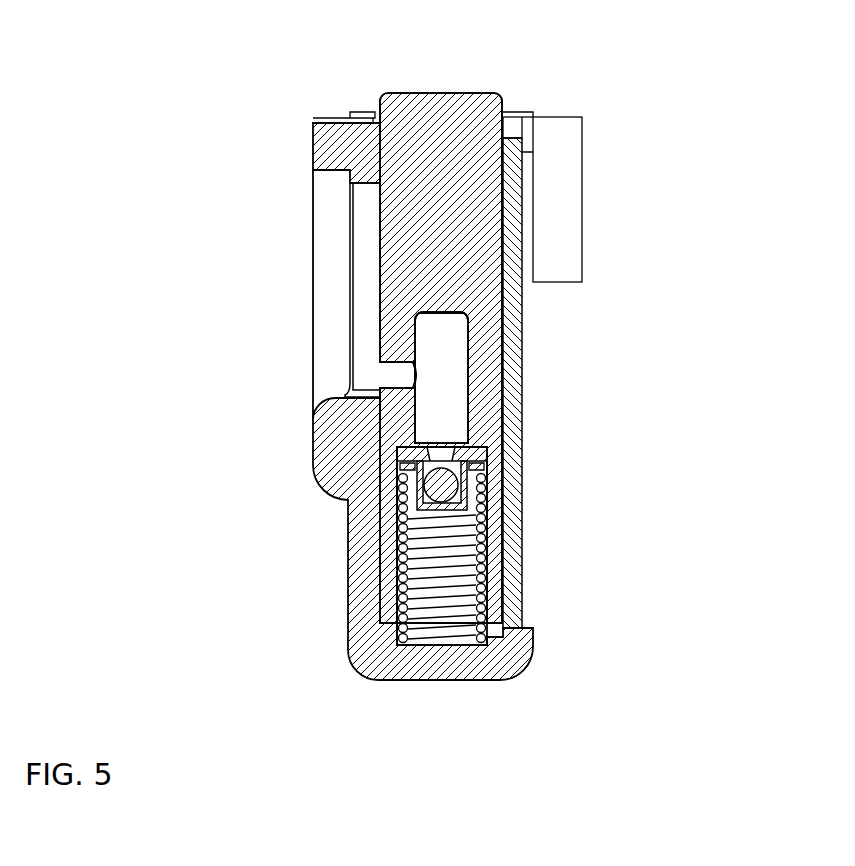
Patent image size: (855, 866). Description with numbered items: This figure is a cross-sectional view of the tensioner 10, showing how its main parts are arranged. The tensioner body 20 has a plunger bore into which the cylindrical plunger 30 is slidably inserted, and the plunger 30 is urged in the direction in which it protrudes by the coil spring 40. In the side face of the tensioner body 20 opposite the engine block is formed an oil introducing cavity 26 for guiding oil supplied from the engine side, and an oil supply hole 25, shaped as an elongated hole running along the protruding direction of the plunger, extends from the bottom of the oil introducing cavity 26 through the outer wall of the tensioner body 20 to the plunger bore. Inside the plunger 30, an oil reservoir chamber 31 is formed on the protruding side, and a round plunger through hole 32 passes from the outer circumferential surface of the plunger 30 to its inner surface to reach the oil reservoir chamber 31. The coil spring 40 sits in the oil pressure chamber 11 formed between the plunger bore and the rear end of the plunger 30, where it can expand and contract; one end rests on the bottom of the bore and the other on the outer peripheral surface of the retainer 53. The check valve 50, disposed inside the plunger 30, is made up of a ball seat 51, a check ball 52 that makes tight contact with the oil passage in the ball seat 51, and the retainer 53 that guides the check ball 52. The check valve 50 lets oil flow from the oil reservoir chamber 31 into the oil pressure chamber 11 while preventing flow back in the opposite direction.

The tensioner 10 is at (226, 93).
The oil pressure chamber 11 is at (447, 613).
The tensioner body 20 is at (513, 485).
The oil supply hole 25 is at (363, 282).
The oil introducing cavity 26 is at (327, 210).
The plunger 30 is at (445, 125).
The oil reservoir chamber 31 is at (452, 350).
The plunger through hole 32 is at (393, 375).
The coil spring 40 is at (490, 565).
The check valve 50 is at (213, 495).
The ball seat 51 is at (400, 452).
The check ball 52 is at (427, 483).
The retainer 53 is at (417, 500).